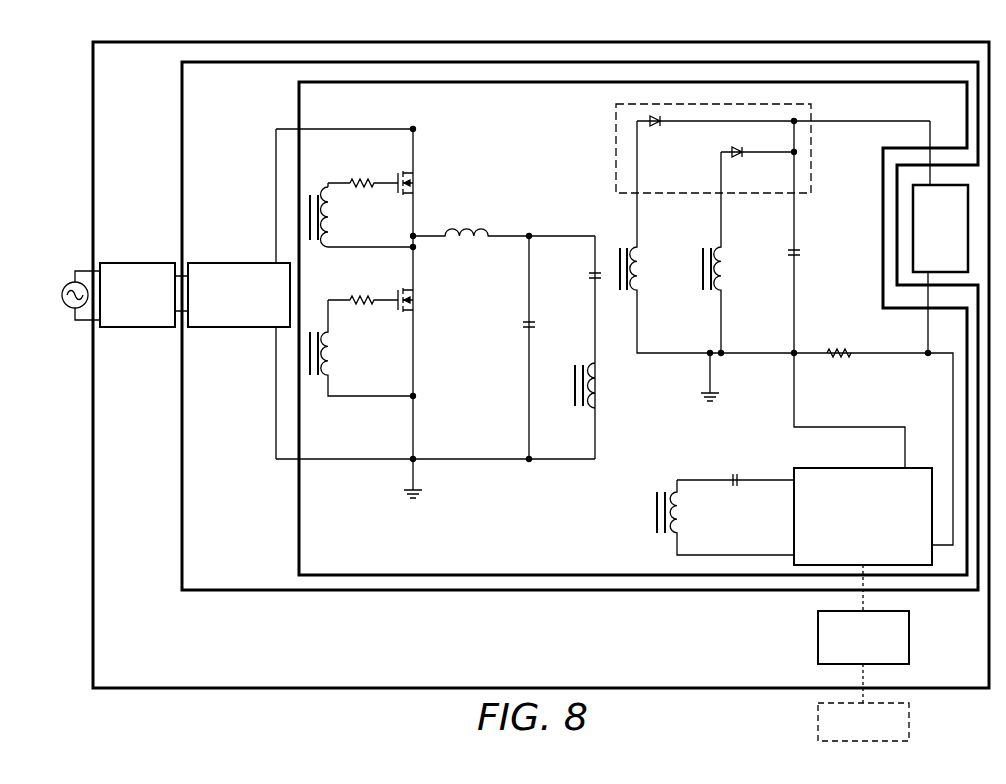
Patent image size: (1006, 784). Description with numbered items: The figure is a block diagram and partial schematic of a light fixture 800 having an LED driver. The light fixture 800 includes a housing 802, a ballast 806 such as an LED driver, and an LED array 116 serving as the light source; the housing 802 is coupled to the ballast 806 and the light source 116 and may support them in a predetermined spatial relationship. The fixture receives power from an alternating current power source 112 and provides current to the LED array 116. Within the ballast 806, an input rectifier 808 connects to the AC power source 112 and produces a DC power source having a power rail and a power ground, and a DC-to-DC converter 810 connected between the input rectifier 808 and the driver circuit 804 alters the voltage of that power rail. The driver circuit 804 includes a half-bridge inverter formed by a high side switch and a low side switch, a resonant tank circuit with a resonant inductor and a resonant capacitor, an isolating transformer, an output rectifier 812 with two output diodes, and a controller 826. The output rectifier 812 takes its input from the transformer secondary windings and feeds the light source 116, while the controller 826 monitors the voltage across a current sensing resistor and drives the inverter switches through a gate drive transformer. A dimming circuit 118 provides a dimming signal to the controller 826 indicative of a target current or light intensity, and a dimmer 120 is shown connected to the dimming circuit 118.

The light fixture 800 is at (80, 54).
The housing 802 is at (114, 42).
The driver circuit 804 is at (181, 74).
The ballast 806 is at (299, 86).
The input rectifier 808 is at (158, 263).
The DC-to-DC converter 810 is at (253, 263).
The output rectifier 812 is at (616, 148).
The controller 826 is at (873, 468).
The AC power source 112 is at (63, 289).
The LED array 116 is at (955, 243).
The dimming circuit 118 is at (818, 638).
The dimmer 120 is at (818, 718).